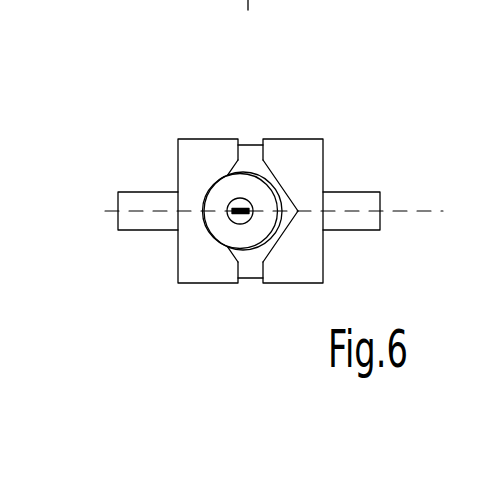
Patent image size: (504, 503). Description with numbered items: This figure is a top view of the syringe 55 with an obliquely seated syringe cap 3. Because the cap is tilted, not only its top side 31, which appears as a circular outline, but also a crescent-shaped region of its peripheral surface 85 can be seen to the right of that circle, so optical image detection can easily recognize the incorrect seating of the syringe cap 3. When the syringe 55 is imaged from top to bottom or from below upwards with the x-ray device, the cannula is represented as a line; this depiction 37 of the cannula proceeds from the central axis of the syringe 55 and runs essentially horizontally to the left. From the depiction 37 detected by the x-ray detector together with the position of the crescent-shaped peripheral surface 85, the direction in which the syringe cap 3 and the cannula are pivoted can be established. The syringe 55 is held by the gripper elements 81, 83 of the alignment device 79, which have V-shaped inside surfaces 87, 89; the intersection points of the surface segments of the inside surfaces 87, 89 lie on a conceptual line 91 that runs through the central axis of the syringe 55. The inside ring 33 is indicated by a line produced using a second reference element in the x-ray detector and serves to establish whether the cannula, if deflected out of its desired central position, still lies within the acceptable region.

The syringe cap 3 is at (243, 262).
The top side 31 is at (226, 186).
The inside ring 33 is at (233, 207).
The depiction of the cannula 37 is at (240, 211).
The syringe 55 is at (251, 133).
The alignment device 79 is at (338, 125).
The gripper element 81 is at (197, 270).
The gripper element 83 is at (297, 273).
The peripheral surface 85 is at (282, 200).
The V-shaped inside surface 87 is at (238, 162).
The V-shaped inside surface 89 is at (282, 235).
The conceptual line 91 is at (422, 207).